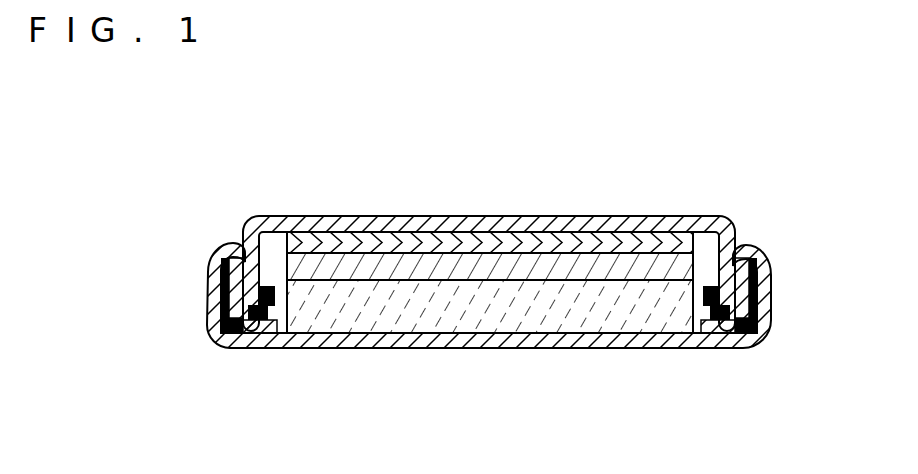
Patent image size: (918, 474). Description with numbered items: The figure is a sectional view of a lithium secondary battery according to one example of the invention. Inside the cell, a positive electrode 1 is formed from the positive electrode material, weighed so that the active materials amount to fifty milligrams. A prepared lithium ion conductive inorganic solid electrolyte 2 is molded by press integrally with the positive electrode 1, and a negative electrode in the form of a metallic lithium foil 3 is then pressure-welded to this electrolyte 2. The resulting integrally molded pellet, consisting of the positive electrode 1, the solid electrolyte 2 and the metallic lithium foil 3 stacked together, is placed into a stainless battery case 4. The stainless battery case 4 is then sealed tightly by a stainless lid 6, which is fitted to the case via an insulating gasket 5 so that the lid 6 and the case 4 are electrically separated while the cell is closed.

The positive electrode 1 is at (345, 318).
The lithium ion conductive inorganic solid electrolyte 2 is at (347, 265).
The metallic lithium foil 3 is at (422, 240).
The stainless battery case 4 is at (600, 348).
The insulating gasket 5 is at (760, 330).
The stainless lid 6 is at (617, 217).